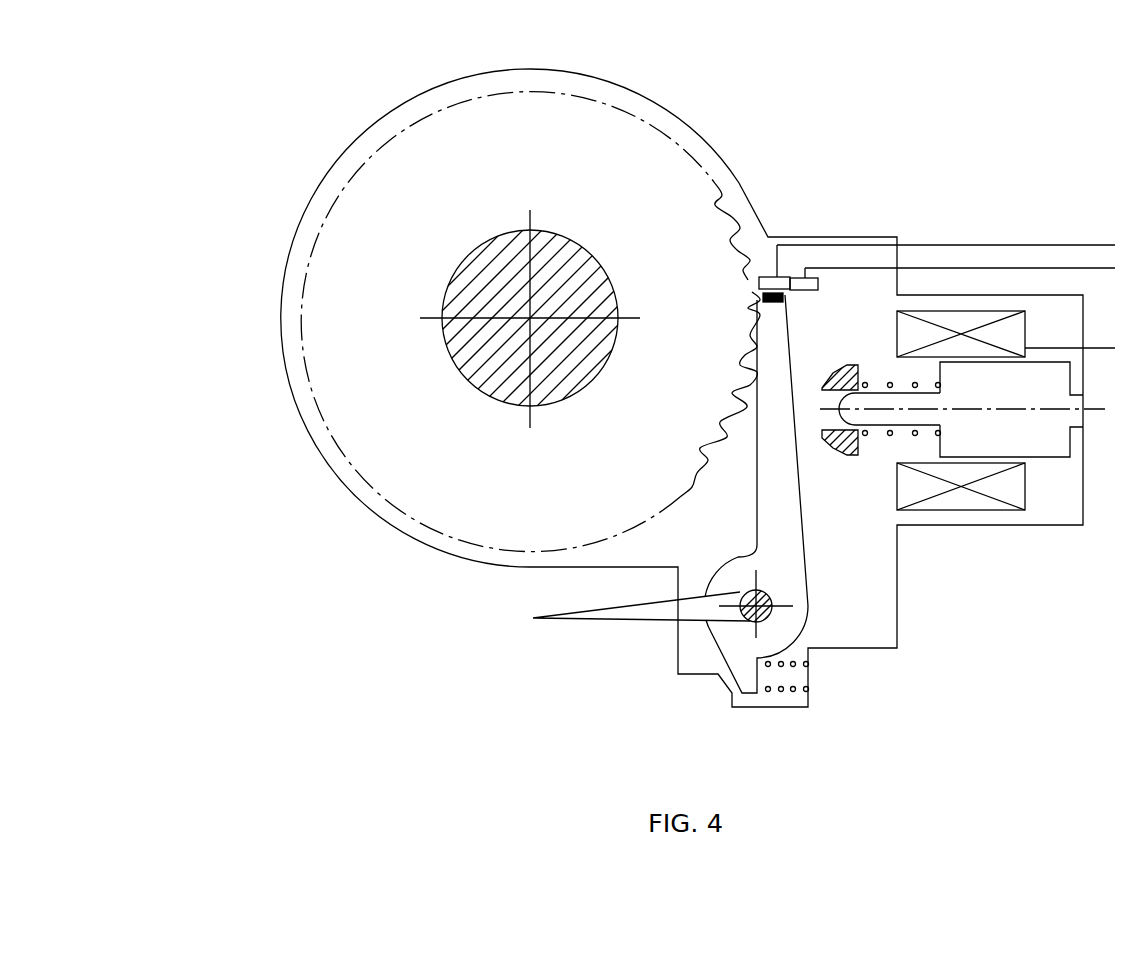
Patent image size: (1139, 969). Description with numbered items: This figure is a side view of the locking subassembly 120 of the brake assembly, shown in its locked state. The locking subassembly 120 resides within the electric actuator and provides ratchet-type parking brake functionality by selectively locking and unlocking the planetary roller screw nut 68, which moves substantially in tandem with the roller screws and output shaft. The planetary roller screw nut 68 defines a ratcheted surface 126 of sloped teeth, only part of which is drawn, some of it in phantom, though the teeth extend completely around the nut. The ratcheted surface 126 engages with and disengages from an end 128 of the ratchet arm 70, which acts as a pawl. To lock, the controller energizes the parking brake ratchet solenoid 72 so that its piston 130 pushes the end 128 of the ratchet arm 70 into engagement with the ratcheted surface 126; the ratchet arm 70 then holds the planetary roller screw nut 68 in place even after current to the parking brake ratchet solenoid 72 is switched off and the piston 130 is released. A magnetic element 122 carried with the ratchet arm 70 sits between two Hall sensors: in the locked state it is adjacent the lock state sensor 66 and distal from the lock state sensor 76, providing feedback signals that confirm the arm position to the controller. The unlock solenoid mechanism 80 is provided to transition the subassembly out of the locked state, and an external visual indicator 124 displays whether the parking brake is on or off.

The locking subassembly 120 is at (304, 74).
The planetary roller screw nut 68 is at (460, 128).
The ratcheted surface 126 is at (708, 224).
The end of the ratchet arm 128 is at (736, 318).
The lock state sensor 66 is at (757, 287).
The lock state sensor 76 is at (818, 286).
The magnetic element 122 is at (783, 300).
The ratchet arm 70 is at (810, 527).
The external visual indicator 124 is at (562, 663).
The unlock solenoid mechanism 80 is at (805, 697).
The parking brake ratchet solenoid 72 is at (972, 305).
The piston 130 is at (985, 399).